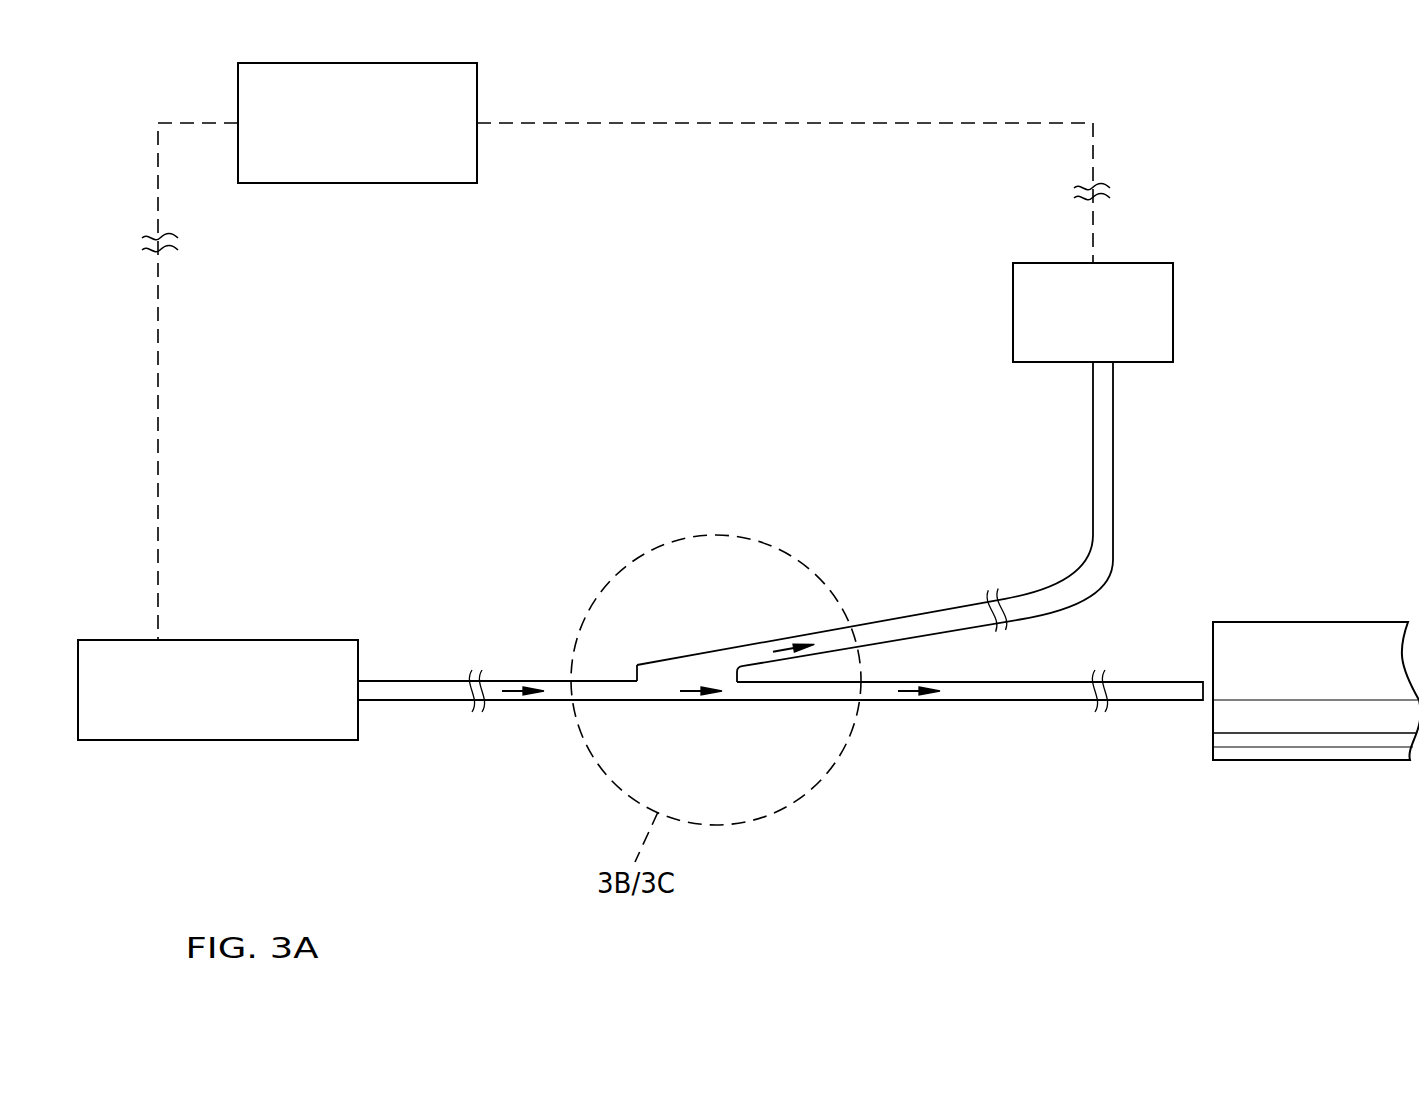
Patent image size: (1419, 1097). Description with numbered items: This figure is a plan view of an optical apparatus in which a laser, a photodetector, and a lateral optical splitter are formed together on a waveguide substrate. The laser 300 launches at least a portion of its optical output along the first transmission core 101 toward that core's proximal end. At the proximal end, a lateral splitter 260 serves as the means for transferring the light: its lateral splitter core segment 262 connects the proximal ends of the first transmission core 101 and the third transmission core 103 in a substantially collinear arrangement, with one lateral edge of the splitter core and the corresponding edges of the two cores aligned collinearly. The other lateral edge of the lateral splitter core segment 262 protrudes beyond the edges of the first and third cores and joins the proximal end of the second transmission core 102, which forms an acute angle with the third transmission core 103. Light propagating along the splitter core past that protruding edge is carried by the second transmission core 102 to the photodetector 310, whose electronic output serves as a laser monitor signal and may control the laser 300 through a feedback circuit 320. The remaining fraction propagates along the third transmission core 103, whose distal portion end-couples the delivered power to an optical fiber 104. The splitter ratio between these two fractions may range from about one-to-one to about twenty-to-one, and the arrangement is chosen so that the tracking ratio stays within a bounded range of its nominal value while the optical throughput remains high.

The laser 300 is at (194, 699).
The photodetector 310 is at (1069, 341).
The feedback circuit 320 is at (333, 141).
The first transmission core 101 is at (557, 692).
The second transmission core 102 is at (917, 623).
The third transmission core 103 is at (983, 692).
The optical fiber 104 is at (1310, 679).
The lateral splitter 260 is at (735, 710).
The lateral splitter core segment 262 is at (695, 673).